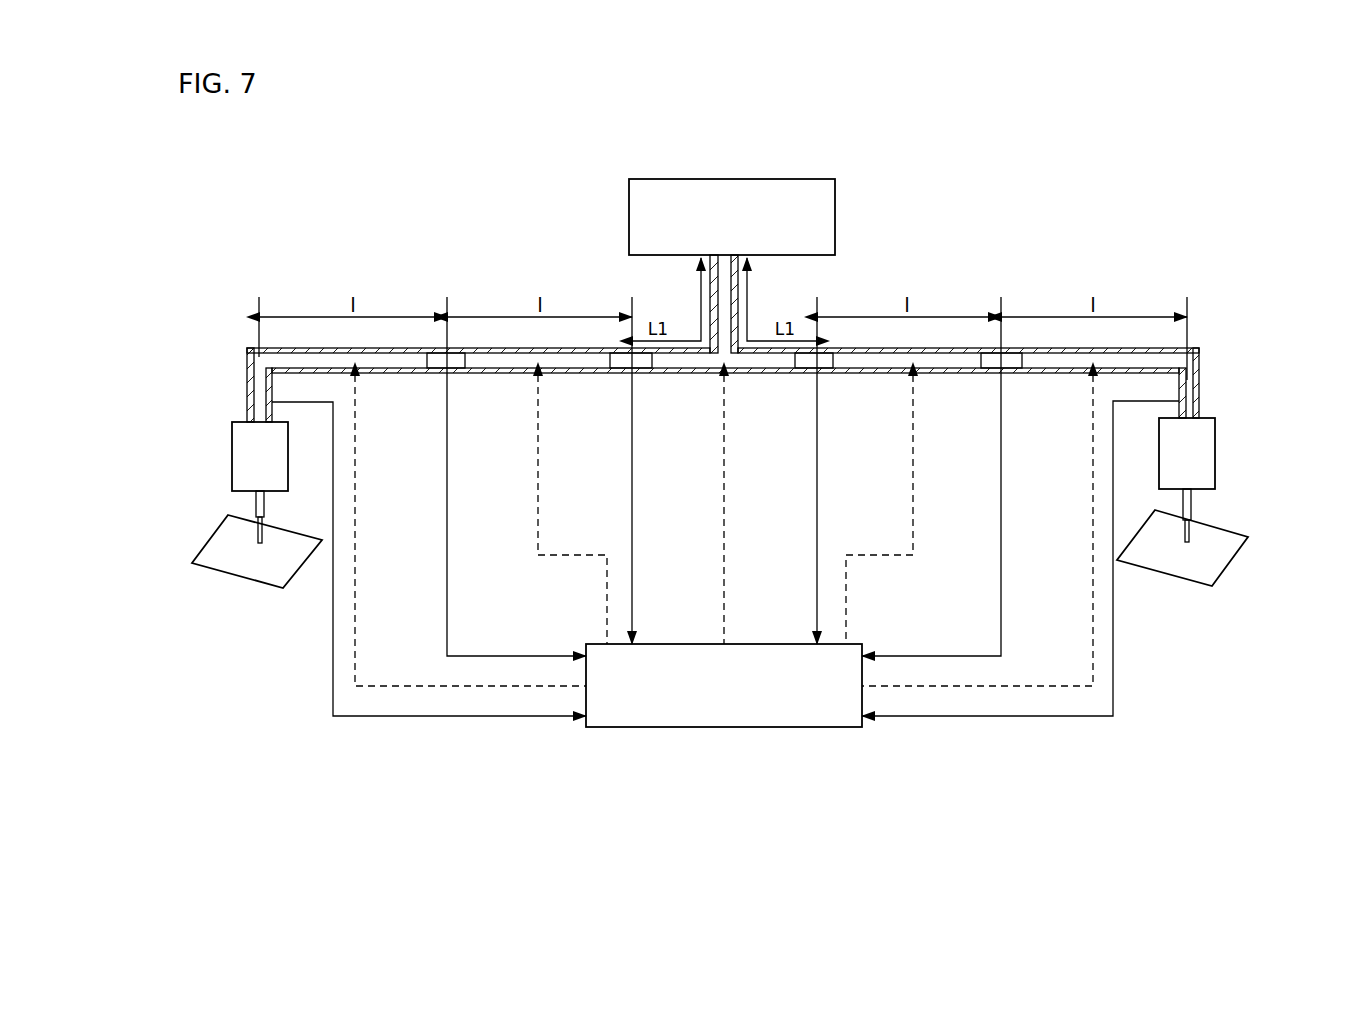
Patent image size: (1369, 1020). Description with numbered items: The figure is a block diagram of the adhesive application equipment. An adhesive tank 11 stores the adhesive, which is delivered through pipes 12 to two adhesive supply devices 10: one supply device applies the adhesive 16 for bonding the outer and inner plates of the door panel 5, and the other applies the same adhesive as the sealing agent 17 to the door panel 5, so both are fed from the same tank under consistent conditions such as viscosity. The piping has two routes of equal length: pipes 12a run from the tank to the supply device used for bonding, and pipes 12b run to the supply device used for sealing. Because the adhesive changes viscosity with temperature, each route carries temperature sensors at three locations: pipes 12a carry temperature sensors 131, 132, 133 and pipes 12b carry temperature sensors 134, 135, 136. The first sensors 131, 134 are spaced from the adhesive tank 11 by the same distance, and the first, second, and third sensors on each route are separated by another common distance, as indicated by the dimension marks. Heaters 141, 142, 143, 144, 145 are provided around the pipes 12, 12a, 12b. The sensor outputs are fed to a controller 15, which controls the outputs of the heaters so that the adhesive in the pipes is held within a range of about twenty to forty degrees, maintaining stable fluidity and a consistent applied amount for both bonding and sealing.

The door panel 5 is at (237, 556).
The adhesive supply device 10 is at (253, 468).
The adhesive tank 11 is at (760, 179).
The pipes 12 is at (723, 300).
The pipes 12a is at (876, 362).
The pipes 12b is at (478, 362).
The controller 15 is at (800, 718).
The adhesive 16 is at (1190, 532).
The sealing agent 17 is at (256, 533).
The temperature sensor 131 is at (805, 360).
The temperature sensor 132 is at (993, 364).
The temperature sensor 133 is at (1200, 401).
The temperature sensor 134 is at (622, 360).
The temperature sensor 135 is at (436, 368).
The temperature sensor 136 is at (250, 405).
The heater 141 is at (698, 375).
The heater 142 is at (953, 375).
The heater 143 is at (1063, 375).
The heater 144 is at (525, 375).
The heater 145 is at (398, 375).